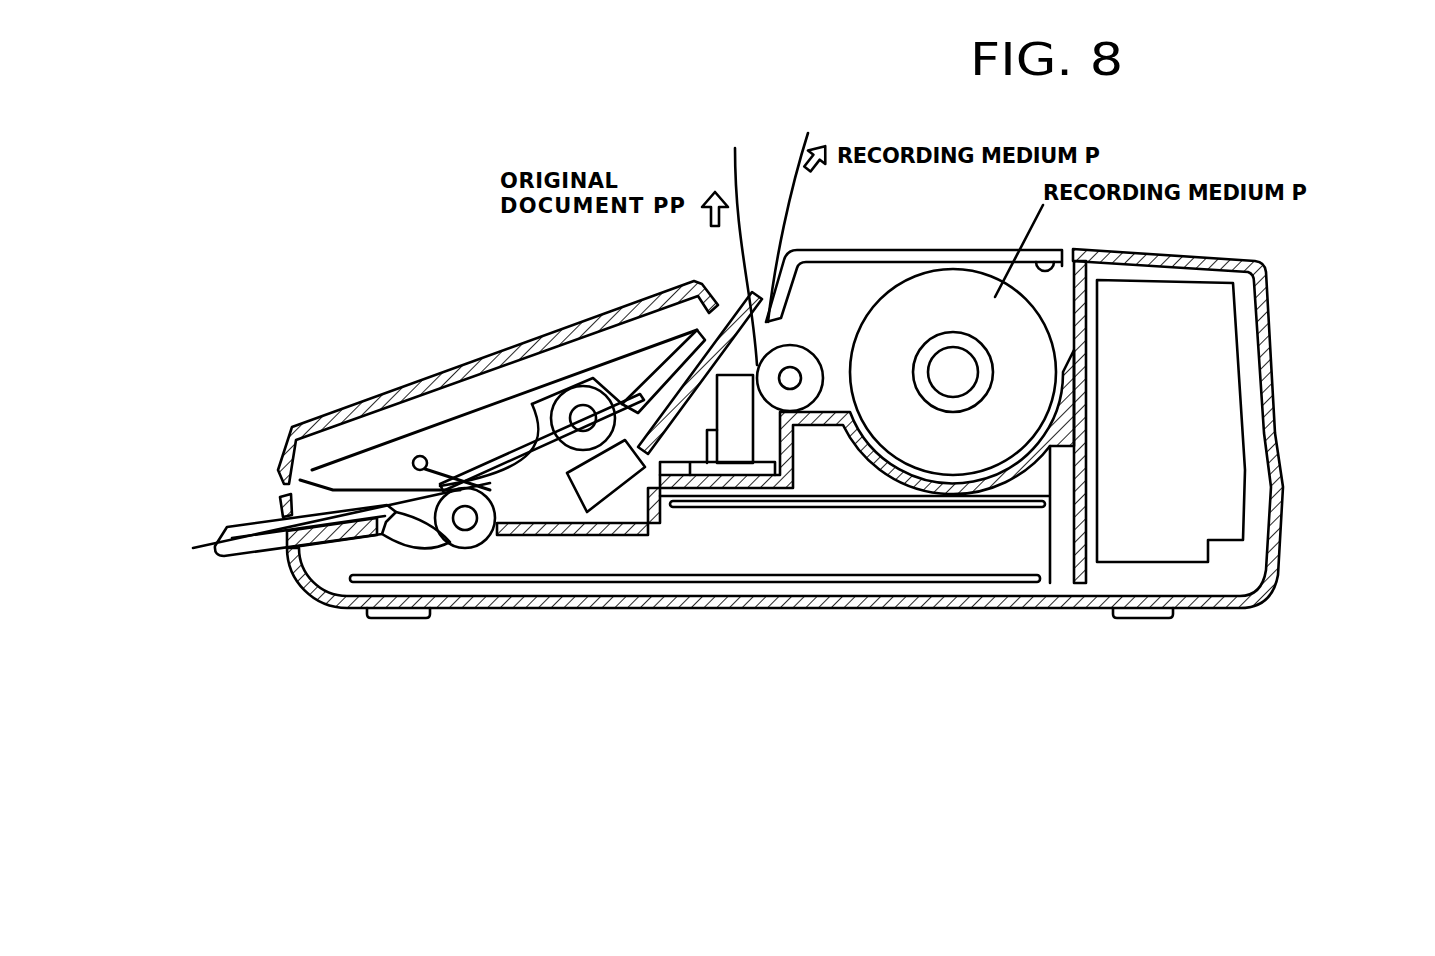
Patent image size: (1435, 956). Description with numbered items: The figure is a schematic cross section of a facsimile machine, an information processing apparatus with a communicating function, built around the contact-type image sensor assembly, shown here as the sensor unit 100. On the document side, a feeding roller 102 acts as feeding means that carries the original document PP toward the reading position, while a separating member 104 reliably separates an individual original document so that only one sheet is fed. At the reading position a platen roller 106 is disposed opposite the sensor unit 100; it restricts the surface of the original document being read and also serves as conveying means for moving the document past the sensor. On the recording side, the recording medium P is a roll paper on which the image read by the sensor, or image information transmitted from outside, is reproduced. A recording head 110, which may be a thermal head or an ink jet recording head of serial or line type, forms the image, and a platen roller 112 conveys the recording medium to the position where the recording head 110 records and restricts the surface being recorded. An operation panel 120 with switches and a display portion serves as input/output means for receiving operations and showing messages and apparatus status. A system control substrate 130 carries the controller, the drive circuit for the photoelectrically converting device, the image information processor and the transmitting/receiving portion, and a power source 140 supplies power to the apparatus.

The sensor unit 100 is at (558, 507).
The feeding roller 102 is at (453, 542).
The separating member 104 is at (443, 466).
The platen roller 106 is at (563, 402).
The recording head 110 is at (765, 460).
The platen roller 112 is at (803, 357).
The operation panel 120 is at (363, 395).
The system control substrate 130 is at (1022, 576).
The power source 140 is at (1213, 292).